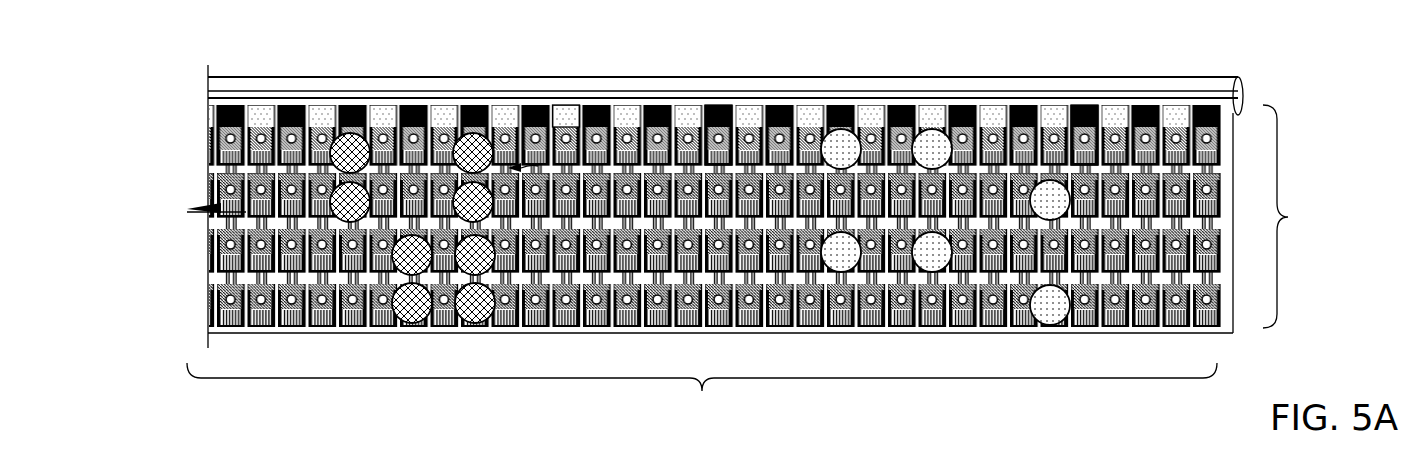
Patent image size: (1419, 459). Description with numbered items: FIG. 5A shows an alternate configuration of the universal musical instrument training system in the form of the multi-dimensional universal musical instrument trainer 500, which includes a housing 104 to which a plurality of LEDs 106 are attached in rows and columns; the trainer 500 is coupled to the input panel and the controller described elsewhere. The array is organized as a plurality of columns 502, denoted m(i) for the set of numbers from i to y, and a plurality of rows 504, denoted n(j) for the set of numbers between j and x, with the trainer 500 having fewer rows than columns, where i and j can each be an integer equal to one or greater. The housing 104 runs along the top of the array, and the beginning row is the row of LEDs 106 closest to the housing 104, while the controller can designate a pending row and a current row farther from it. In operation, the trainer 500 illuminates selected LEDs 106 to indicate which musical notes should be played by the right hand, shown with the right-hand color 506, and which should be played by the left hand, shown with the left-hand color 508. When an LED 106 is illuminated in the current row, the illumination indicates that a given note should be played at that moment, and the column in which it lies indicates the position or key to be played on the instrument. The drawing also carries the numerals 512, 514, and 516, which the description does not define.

The multi-dimensional universal musical instrument trainer 500 is at (226, 38).
The housing 104 is at (365, 77).
The LEDs 106 is at (716, 112).
The columns 502 is at (1294, 216).
The rows 504 is at (702, 382).
The right-hand color 506 is at (918, 70).
The left-hand color 508 is at (559, 105).
The first defective device group 512 is at (393, 455).
The second device group 514 is at (725, 455).
The third device group 516 is at (1088, 449).